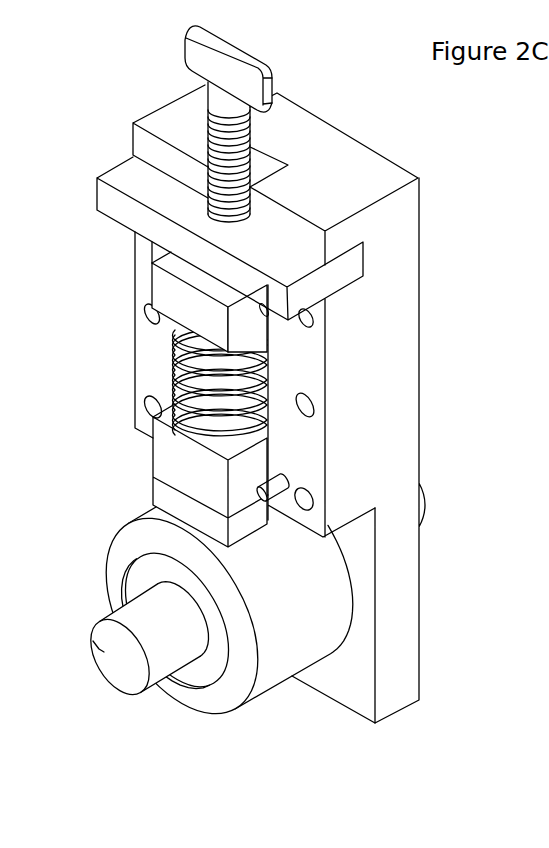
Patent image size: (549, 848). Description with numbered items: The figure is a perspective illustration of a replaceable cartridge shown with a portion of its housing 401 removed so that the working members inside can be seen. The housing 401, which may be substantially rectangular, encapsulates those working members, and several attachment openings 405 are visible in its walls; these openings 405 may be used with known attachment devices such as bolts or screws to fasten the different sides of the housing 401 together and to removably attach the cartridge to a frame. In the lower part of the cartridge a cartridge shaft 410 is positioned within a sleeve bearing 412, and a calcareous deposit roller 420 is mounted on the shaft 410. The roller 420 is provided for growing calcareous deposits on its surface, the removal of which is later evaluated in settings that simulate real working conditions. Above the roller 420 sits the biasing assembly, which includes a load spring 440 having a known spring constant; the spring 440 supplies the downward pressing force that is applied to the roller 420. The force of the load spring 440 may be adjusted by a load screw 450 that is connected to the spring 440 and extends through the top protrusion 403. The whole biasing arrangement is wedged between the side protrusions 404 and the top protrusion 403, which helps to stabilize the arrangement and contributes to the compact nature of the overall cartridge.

The housing 401 is at (403, 230).
The top protrusion 403 is at (125, 173).
The side protrusions 404 is at (148, 362).
The attachment openings 405 is at (314, 318).
The cartridge shaft 410 is at (152, 662).
The sleeve bearing 412 is at (200, 673).
The calcareous deposit roller 420 is at (260, 660).
The load spring 440 is at (178, 377).
The load screw 450 is at (207, 110).